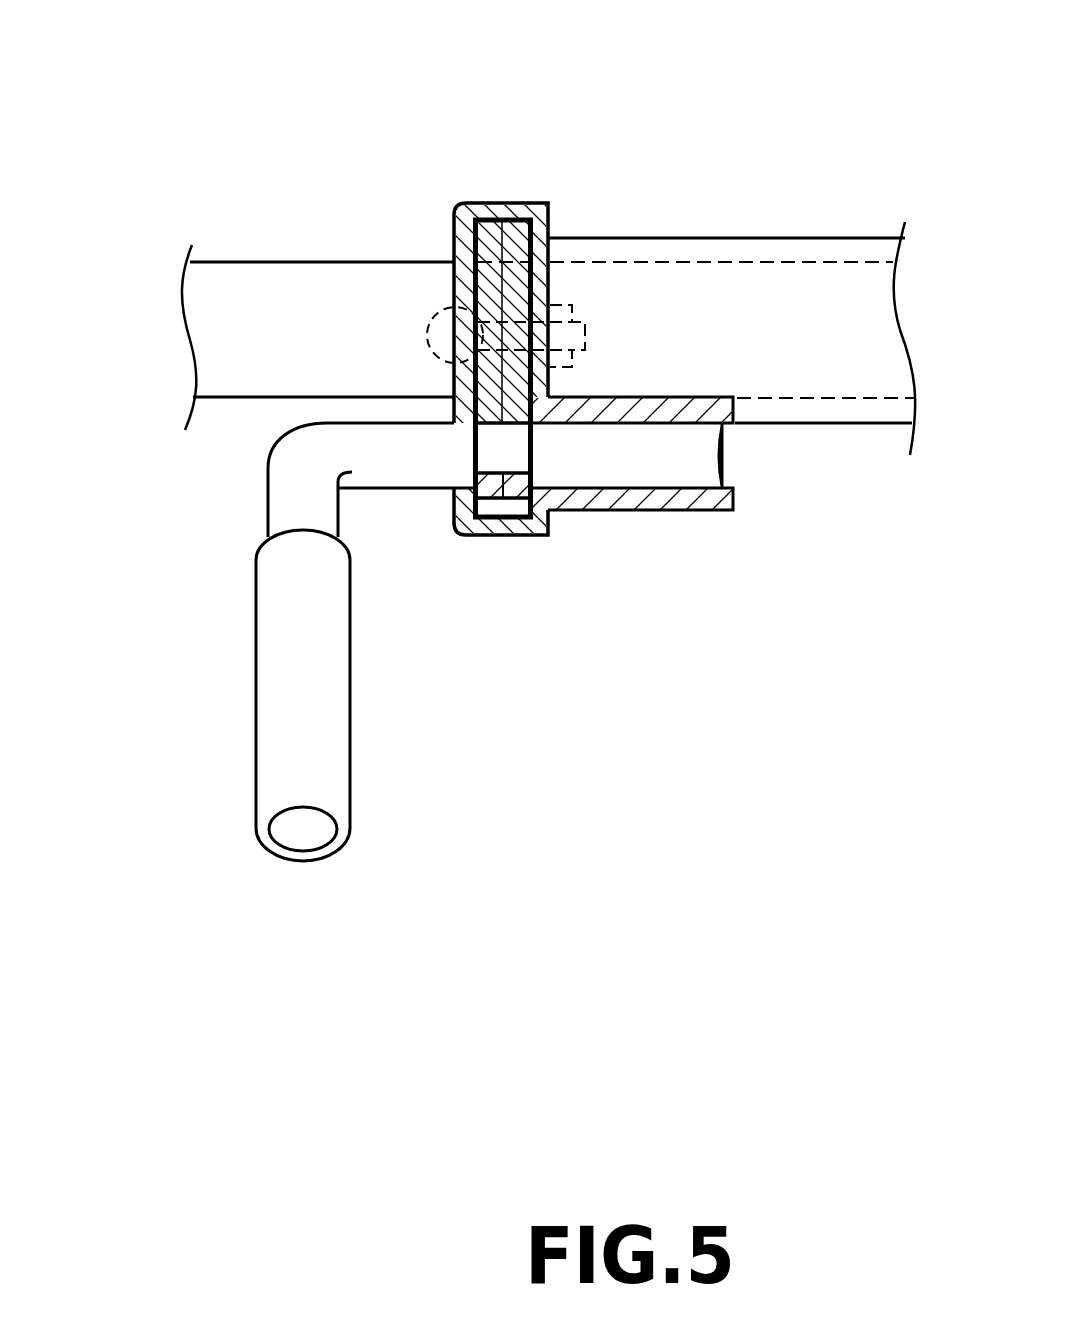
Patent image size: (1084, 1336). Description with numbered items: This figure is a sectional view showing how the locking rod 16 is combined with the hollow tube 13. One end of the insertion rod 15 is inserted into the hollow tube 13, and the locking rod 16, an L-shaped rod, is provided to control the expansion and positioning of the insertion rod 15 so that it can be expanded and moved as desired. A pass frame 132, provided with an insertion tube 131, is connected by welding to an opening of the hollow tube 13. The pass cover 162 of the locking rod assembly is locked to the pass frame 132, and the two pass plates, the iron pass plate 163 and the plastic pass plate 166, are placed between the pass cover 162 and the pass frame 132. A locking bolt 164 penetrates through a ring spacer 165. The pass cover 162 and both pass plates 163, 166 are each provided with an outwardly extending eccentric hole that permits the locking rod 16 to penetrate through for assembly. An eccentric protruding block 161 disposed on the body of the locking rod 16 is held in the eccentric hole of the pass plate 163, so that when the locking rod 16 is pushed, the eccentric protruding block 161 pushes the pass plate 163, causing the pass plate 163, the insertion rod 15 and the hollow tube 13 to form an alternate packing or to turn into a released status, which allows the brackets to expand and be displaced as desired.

The hollow tube 13 is at (828, 250).
The insertion rod 15 is at (265, 287).
The locking rod 16 is at (290, 497).
The insertion tube 131 is at (641, 505).
The pass frame 132 is at (550, 205).
The eccentric protruding block 161 is at (497, 432).
The pass cover 162 is at (460, 203).
The pass plate 163 is at (517, 487).
The locking bolt 164 is at (440, 318).
The ring spacer 165 is at (548, 273).
The pass plate 166 is at (490, 218).